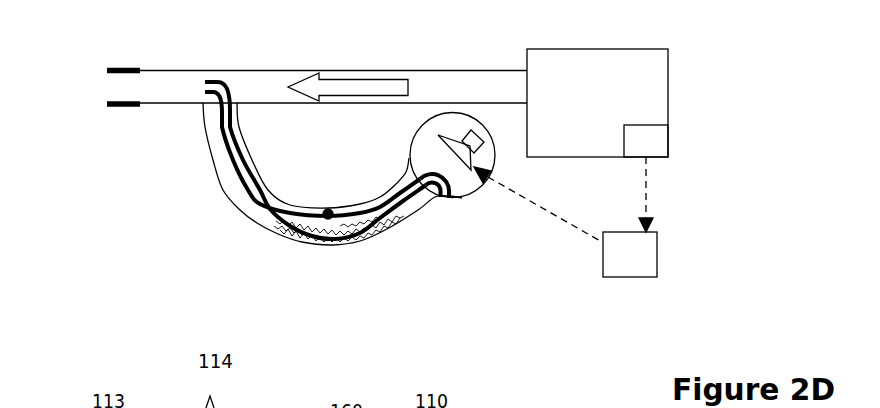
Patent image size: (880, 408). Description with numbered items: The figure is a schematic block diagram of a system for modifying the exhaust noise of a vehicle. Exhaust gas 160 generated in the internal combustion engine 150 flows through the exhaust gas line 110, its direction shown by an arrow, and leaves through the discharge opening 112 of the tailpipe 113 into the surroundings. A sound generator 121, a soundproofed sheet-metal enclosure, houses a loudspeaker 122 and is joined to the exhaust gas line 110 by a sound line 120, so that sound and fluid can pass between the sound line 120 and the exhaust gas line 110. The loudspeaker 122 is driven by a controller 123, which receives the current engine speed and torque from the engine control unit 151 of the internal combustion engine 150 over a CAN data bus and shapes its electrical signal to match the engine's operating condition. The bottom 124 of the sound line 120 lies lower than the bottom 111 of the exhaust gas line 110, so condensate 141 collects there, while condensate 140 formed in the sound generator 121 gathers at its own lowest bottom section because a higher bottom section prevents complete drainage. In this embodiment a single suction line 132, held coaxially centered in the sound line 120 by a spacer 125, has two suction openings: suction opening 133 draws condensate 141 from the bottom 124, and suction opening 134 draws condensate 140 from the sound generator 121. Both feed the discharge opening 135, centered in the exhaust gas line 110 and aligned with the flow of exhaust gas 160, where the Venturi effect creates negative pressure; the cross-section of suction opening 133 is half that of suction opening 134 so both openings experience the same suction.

The exhaust gas line 110 is at (245, 69).
The bottom of the exhaust gas line 111 is at (170, 106).
The discharge opening 112 is at (97, 96).
The tailpipe 113 is at (120, 66).
The sound line 120 is at (249, 158).
The sound generator 121 is at (411, 147).
The loudspeaker 122 is at (496, 150).
The controller 123 is at (612, 278).
The bottom of the sound line 124 is at (278, 238).
The spacer 125 is at (329, 207).
The suction line 132 is at (233, 181).
The suction opening 133 is at (320, 247).
The suction opening 134 is at (452, 203).
The discharge opening 135 is at (203, 84).
The condensate 140 is at (445, 199).
The condensate 141 is at (335, 247).
The internal combustion engine 150 is at (668, 84).
The engine control unit 151 is at (668, 137).
The exhaust gas 160 is at (366, 79).